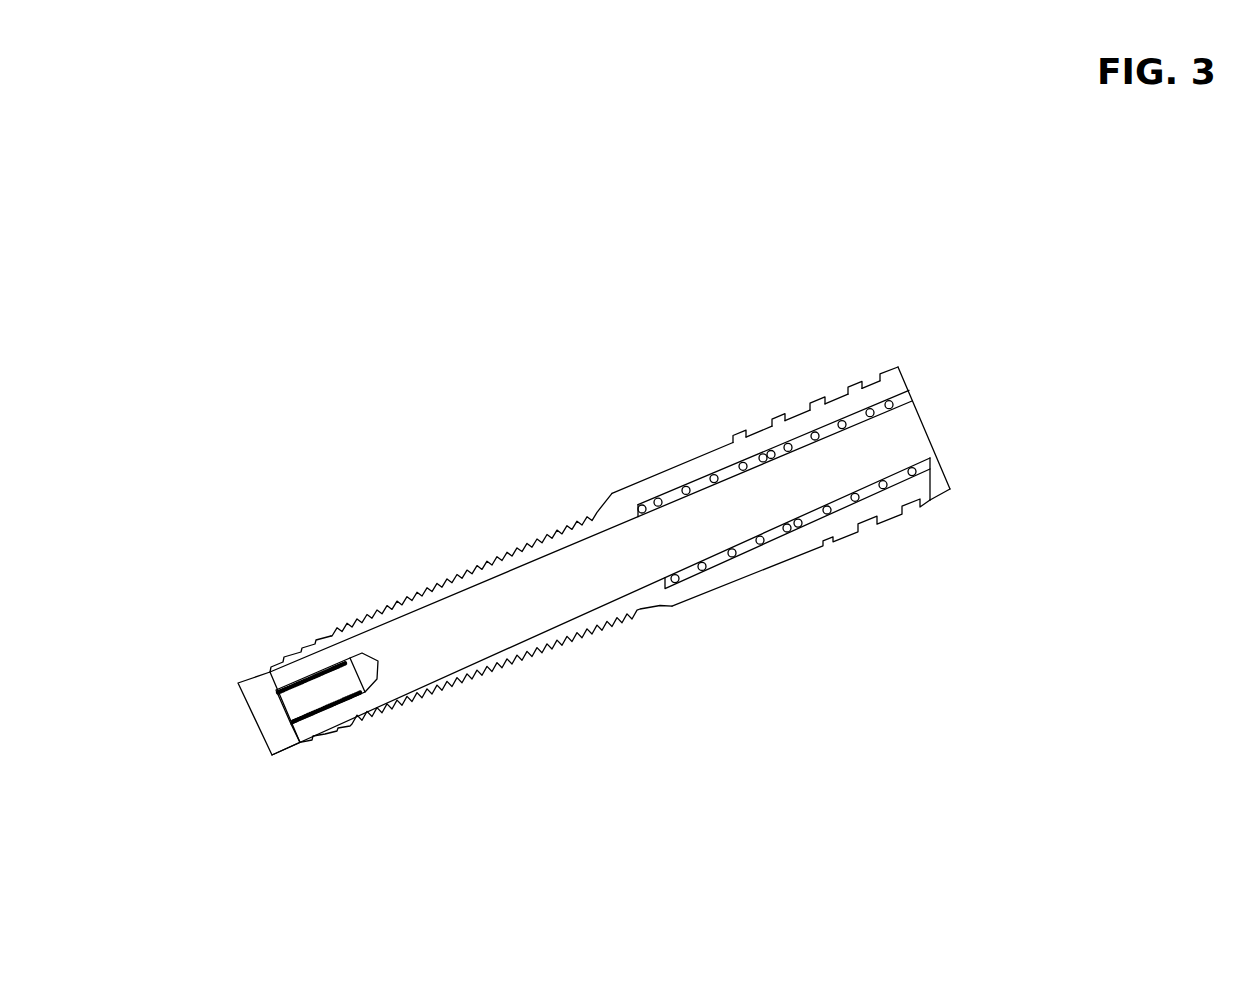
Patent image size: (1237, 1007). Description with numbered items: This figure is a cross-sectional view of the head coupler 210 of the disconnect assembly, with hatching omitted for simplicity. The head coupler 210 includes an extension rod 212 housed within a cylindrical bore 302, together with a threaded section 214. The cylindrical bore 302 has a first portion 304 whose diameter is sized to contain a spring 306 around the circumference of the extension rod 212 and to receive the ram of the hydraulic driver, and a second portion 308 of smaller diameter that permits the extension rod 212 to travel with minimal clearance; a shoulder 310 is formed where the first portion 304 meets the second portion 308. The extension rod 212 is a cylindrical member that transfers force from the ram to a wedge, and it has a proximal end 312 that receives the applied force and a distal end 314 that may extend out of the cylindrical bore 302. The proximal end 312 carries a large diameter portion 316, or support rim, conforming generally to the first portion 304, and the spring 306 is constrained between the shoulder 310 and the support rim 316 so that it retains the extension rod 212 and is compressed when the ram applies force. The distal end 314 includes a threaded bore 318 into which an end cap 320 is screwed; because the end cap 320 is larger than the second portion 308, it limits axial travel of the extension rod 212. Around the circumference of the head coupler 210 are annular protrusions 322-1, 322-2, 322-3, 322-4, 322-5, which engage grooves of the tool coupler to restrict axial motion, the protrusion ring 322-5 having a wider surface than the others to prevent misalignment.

The head coupler 210 is at (372, 190).
The extension rod 212 is at (452, 607).
The threaded section 214 is at (523, 694).
The cylindrical bore 302 is at (954, 423).
The first portion 304 is at (700, 468).
The spring 306 is at (829, 543).
The second portion 308 is at (535, 549).
The shoulder 310 is at (642, 507).
The proximal end 312 is at (920, 414).
The distal end 314 is at (298, 737).
The large diameter portion 316 is at (930, 501).
The threaded bore 318 is at (329, 670).
The end cap 320 is at (240, 682).
The annular protrusion 322-1 is at (740, 431).
The annular protrusion 322-2 is at (778, 417).
The annular protrusion 322-3 is at (815, 401).
The annular protrusion 322-4 is at (853, 385).
The annular protrusion 322-5 is at (890, 372).